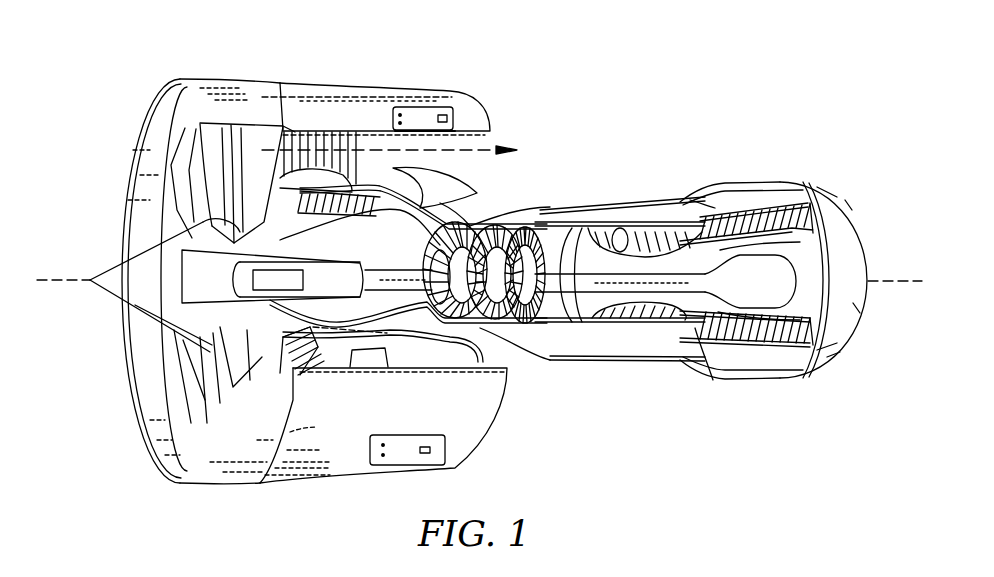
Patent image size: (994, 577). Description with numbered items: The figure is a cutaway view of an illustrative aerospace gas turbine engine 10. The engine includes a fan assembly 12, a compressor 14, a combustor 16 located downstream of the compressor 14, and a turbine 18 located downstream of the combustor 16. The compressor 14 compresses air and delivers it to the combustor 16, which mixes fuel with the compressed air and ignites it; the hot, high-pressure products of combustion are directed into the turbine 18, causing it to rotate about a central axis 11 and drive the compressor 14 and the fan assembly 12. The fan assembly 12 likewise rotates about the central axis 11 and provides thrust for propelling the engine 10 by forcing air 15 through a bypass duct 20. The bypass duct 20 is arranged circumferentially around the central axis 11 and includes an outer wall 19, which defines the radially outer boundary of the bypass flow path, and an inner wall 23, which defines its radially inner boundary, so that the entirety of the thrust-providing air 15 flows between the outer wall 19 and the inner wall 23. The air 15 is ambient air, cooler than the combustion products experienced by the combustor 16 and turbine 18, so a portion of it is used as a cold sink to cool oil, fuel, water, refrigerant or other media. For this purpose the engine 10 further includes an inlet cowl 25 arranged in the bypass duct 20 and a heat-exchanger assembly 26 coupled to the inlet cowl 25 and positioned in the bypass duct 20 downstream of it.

The gas turbine engine 10 is at (751, 81).
The central axis 11 is at (50, 280).
The fan assembly 12 is at (139, 171).
The compressor 14 is at (493, 223).
The air 15 is at (476, 150).
The combustor 16 is at (613, 215).
The turbine 18 is at (770, 196).
The outer wall 19 is at (338, 116).
The bypass duct 20 is at (325, 113).
The inner wall 23 is at (313, 180).
The inlet cowl 25 is at (411, 129).
The heat-exchanger assembly 26 is at (432, 133).